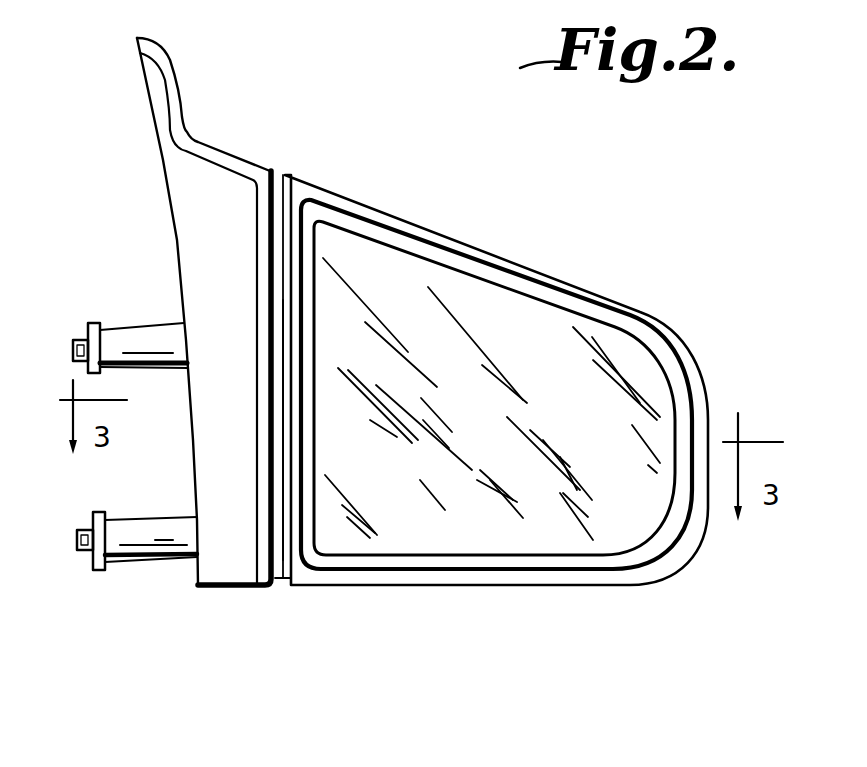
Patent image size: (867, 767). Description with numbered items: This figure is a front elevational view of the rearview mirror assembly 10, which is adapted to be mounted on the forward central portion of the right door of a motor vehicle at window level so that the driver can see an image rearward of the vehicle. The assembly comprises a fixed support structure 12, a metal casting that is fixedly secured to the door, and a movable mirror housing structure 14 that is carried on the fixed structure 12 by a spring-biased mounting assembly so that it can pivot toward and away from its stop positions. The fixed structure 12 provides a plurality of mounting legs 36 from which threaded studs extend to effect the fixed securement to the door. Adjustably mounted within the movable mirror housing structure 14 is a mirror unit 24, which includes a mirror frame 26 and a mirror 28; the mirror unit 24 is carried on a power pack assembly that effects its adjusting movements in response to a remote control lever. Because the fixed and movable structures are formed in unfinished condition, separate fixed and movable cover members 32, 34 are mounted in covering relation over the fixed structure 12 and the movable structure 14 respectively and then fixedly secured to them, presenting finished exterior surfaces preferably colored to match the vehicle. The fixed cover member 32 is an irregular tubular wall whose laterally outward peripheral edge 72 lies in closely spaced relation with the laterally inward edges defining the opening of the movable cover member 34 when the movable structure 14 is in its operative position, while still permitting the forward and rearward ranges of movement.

The rearview mirror assembly 10 is at (482, 220).
The fixed support structure 12 is at (153, 313).
The movable mirror housing structure 14 is at (284, 168).
The mirror unit 24 is at (690, 373).
The mirror frame 26 is at (682, 412).
The mirror 28 is at (437, 547).
The fixed cover member 32 is at (190, 223).
The movable cover member 34 is at (420, 182).
The mounting legs 36 is at (165, 363).
The laterally outward peripheral edge 72 is at (280, 483).